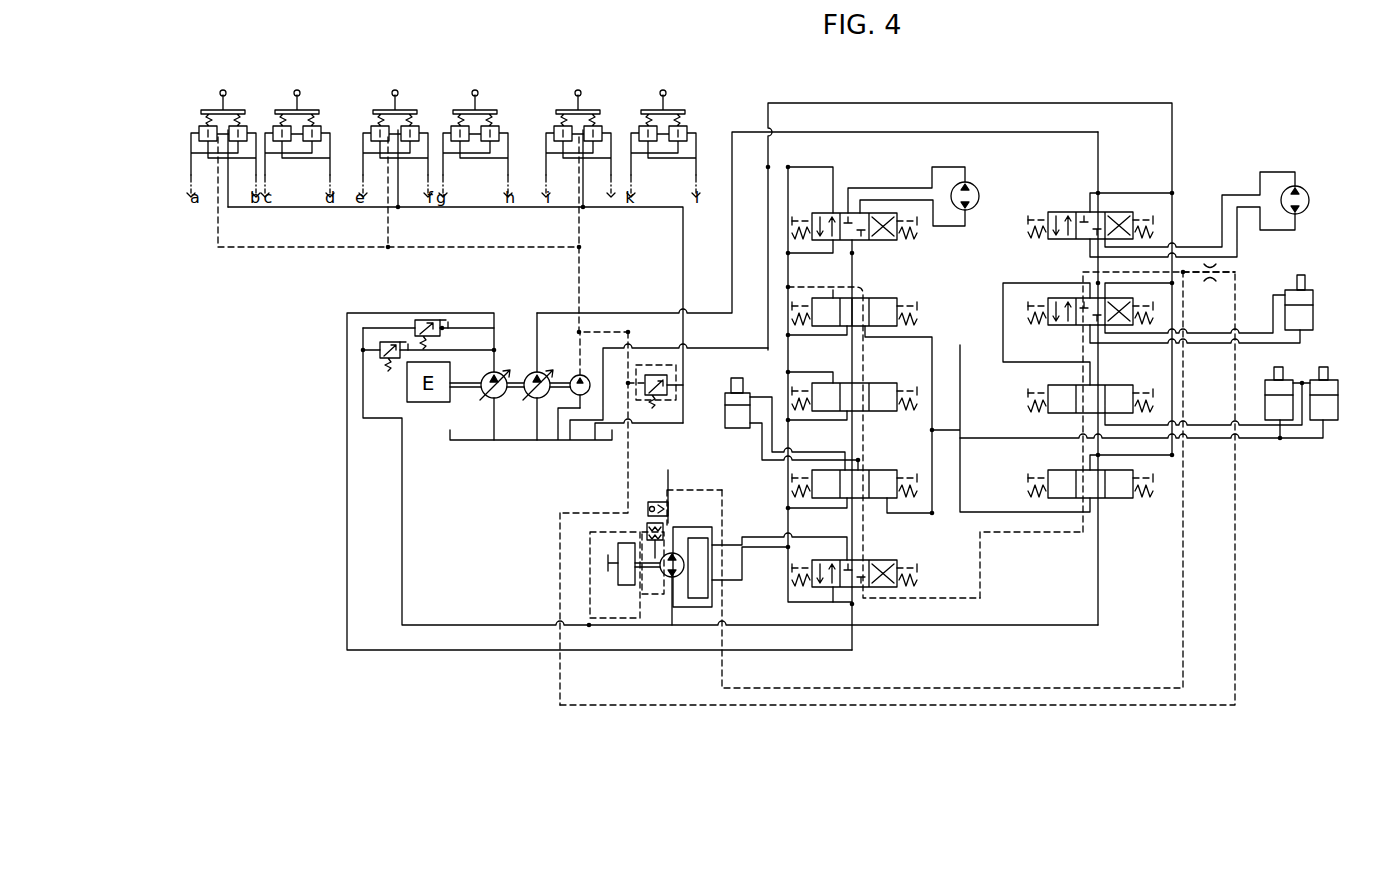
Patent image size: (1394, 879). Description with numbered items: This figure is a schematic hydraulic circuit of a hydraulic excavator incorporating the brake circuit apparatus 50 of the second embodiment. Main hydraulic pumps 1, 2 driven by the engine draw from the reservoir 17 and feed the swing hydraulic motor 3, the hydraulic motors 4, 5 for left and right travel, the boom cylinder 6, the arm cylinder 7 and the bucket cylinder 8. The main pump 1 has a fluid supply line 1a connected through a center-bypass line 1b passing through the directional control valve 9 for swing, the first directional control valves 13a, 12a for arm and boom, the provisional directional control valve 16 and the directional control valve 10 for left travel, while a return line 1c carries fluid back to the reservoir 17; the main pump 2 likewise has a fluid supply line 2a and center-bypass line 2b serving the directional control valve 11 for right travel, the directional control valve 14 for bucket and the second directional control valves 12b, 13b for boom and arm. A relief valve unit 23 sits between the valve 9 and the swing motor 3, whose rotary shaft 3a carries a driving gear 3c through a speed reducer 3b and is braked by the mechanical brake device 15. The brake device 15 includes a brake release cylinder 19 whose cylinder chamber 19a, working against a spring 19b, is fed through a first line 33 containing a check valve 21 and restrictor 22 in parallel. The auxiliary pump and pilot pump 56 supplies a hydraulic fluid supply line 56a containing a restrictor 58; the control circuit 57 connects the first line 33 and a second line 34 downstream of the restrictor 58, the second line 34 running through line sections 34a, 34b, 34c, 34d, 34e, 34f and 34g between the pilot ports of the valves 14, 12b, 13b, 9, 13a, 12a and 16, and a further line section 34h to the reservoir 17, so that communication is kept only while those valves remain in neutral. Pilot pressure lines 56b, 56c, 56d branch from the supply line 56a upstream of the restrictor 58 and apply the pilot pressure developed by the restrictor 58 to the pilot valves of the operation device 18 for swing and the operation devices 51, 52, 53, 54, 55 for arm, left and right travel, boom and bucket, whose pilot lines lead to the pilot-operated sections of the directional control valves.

The main hydraulic pump 1 is at (503, 380).
The fluid supply line 1a is at (347, 460).
The center-bypass line 1b is at (853, 254).
The return line 1c is at (788, 378).
The main hydraulic pump 2 is at (541, 371).
The fluid supply line of main pump 2 2a is at (622, 313).
The center-bypass line of main pump 2 2b is at (1098, 158).
The swing hydraulic motor 3 is at (678, 596).
The rotary shaft 3a is at (671, 580).
The speed reducer 3b is at (630, 586).
The driving gear 3c is at (612, 572).
The hydraulic motor for left travel 4 is at (980, 196).
The hydraulic motor for right travel 5 is at (1310, 201).
The boom cylinder 6 is at (1338, 410).
The arm cylinder 7 is at (725, 403).
The bucket cylinder 8 is at (1313, 315).
The directional control valve for swing 9 is at (872, 560).
The directional control valve for left travel 10 is at (822, 212).
The directional control valve for right travel 11 is at (1078, 212).
The first directional control valve for boom 12a is at (880, 411).
The second directional control valve for boom 12b is at (1052, 413).
The first directional control valve for arm 13a is at (892, 498).
The second directional control valve for arm 13b is at (1120, 498).
The directional control valve for bucket 14 is at (1044, 337).
The mechanical brake device 15 is at (690, 540).
The provisional directional control valve 16 is at (890, 300).
The reservoir 17 is at (512, 443).
The operation device 18 is at (229, 77).
The brake release cylinder 19 is at (664, 531).
The cylinder chamber 19a is at (645, 558).
The spring 19b is at (647, 507).
The check valve 21 is at (629, 492).
The restrictor 22 is at (668, 486).
The relief valve unit 23 is at (708, 592).
The first line 33 is at (1020, 688).
The second line 34 is at (1010, 532).
The line section 34a is at (1080, 276).
The line section 34b is at (1085, 362).
The line section 34c is at (1083, 462).
The line section 34d is at (1063, 532).
The line section 34e is at (862, 536).
The line section 34f is at (866, 440).
The line section 34g is at (866, 350).
The line section 34h is at (796, 287).
The brake circuit apparatus 50 is at (776, 706).
The operation device for arm 51 is at (303, 77).
The operation device for left travel 52 is at (400, 77).
The operation device for right travel 53 is at (477, 77).
The operation device for boom 54 is at (581, 77).
The operation device for bucket 55 is at (667, 77).
The auxiliary pump and pilot pump 56 is at (580, 376).
The hydraulic fluid supply line 56a is at (1028, 706).
The pilot pressure line 56b is at (208, 242).
The pilot pressure line 56c is at (390, 232).
The pilot pressure line 56d is at (582, 238).
The control circuit 57 is at (1006, 597).
The restrictor 58 is at (1210, 281).